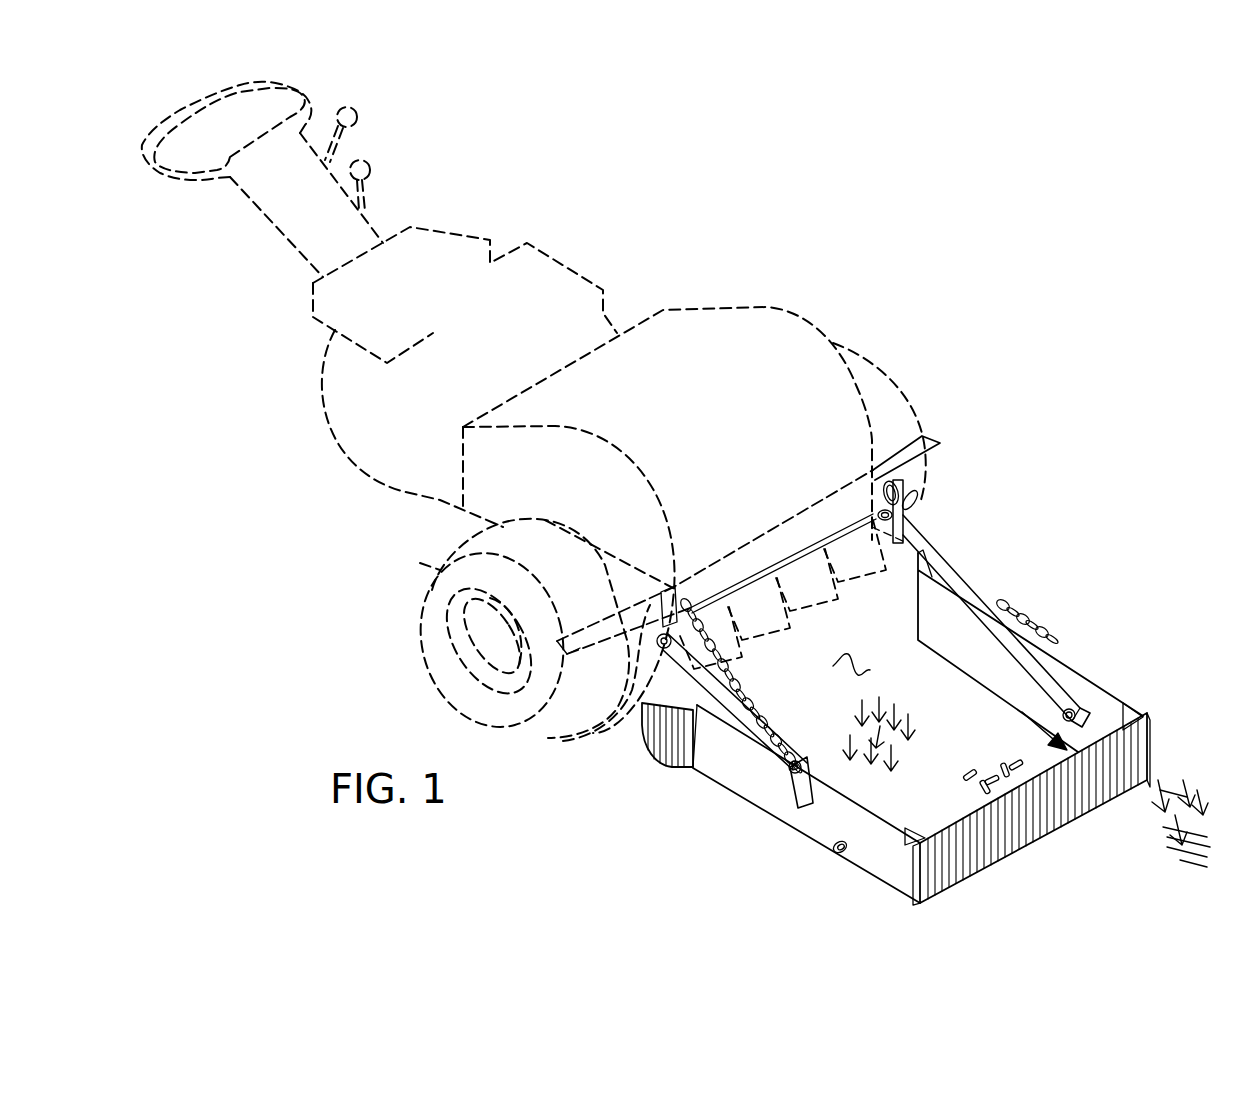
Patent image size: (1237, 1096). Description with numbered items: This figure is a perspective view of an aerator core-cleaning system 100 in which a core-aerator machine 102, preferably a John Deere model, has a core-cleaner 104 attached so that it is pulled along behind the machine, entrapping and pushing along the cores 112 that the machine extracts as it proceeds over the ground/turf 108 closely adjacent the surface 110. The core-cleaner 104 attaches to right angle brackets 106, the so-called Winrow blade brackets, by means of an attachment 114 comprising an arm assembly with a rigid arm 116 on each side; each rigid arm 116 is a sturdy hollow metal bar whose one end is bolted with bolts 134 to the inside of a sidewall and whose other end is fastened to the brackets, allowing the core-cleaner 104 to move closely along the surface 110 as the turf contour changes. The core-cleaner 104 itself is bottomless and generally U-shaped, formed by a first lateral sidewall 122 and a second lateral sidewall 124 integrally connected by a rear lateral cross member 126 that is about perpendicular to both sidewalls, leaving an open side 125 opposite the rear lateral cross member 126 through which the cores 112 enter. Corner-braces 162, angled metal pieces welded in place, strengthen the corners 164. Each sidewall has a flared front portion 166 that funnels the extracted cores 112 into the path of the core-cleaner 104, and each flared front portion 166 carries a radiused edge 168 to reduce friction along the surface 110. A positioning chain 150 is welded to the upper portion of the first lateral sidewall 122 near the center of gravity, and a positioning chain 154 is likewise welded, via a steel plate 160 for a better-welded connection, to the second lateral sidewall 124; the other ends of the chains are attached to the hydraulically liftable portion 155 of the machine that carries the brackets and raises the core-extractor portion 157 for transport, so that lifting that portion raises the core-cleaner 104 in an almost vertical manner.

The aerator core-cleaning system 100 is at (447, 719).
The core-aerator machine 102 is at (773, 376).
The core-cleaner 104 is at (1022, 712).
The right angle brackets 106 is at (906, 511).
The ground/turf 108 is at (895, 715).
The surface 110 is at (1185, 852).
The cores 112 is at (985, 778).
The attachment 114 is at (977, 573).
The rigid arm 116 is at (730, 690).
The first lateral sidewall 122 is at (810, 820).
The second lateral sidewall 124 is at (1097, 680).
The open side 125 is at (868, 669).
The rear lateral cross member 126 is at (1063, 818).
The bolts 134 is at (830, 845).
The positioning chain 150 is at (750, 708).
The positioning chain 154 is at (1040, 635).
The hydraulically liftable portion 155 is at (833, 522).
The core-extractor portion 157 is at (817, 598).
The steel plate 160 is at (787, 795).
The corner-braces 162 is at (1147, 710).
The corners 164 is at (1150, 720).
The flared front portion 166 is at (642, 743).
The radiused edge 168 is at (650, 778).